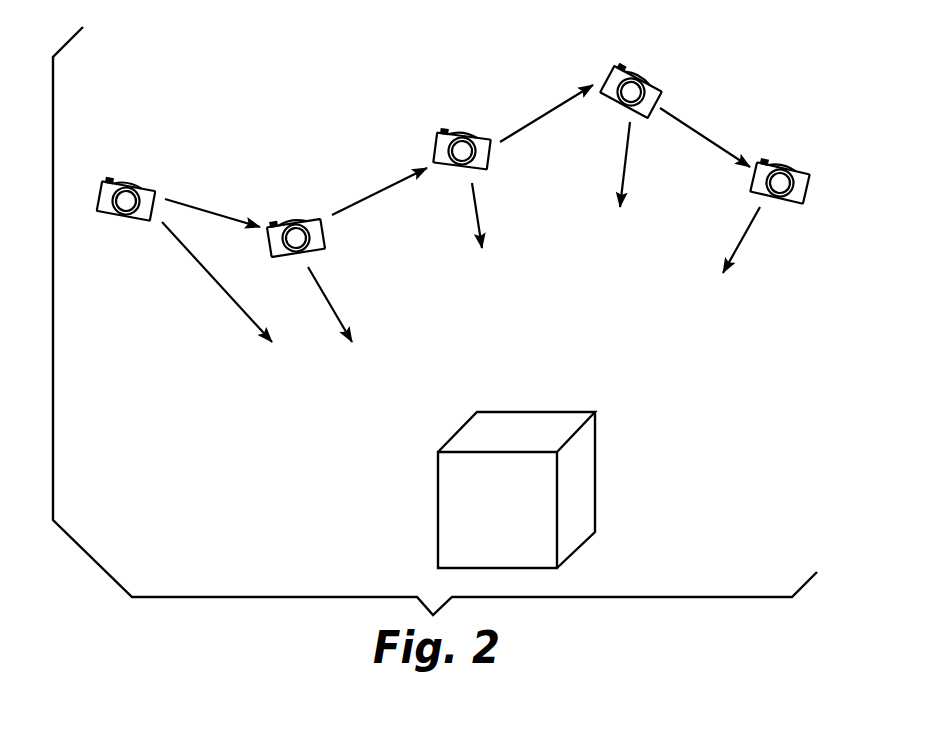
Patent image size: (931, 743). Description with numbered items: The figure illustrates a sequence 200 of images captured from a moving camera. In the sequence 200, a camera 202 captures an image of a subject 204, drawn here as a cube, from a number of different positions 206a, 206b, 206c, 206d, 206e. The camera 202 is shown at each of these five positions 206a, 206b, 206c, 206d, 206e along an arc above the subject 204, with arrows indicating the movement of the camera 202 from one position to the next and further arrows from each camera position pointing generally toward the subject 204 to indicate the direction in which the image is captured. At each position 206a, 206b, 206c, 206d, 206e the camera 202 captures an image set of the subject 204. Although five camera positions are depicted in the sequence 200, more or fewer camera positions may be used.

The sequence 200 is at (488, 490).
The camera 202 is at (157, 277).
The subject 204 is at (598, 455).
The camera position 206a is at (147, 190).
The camera position 206b is at (310, 218).
The camera position 206c is at (484, 140).
The camera position 206d is at (658, 85).
The camera position 206e is at (806, 172).